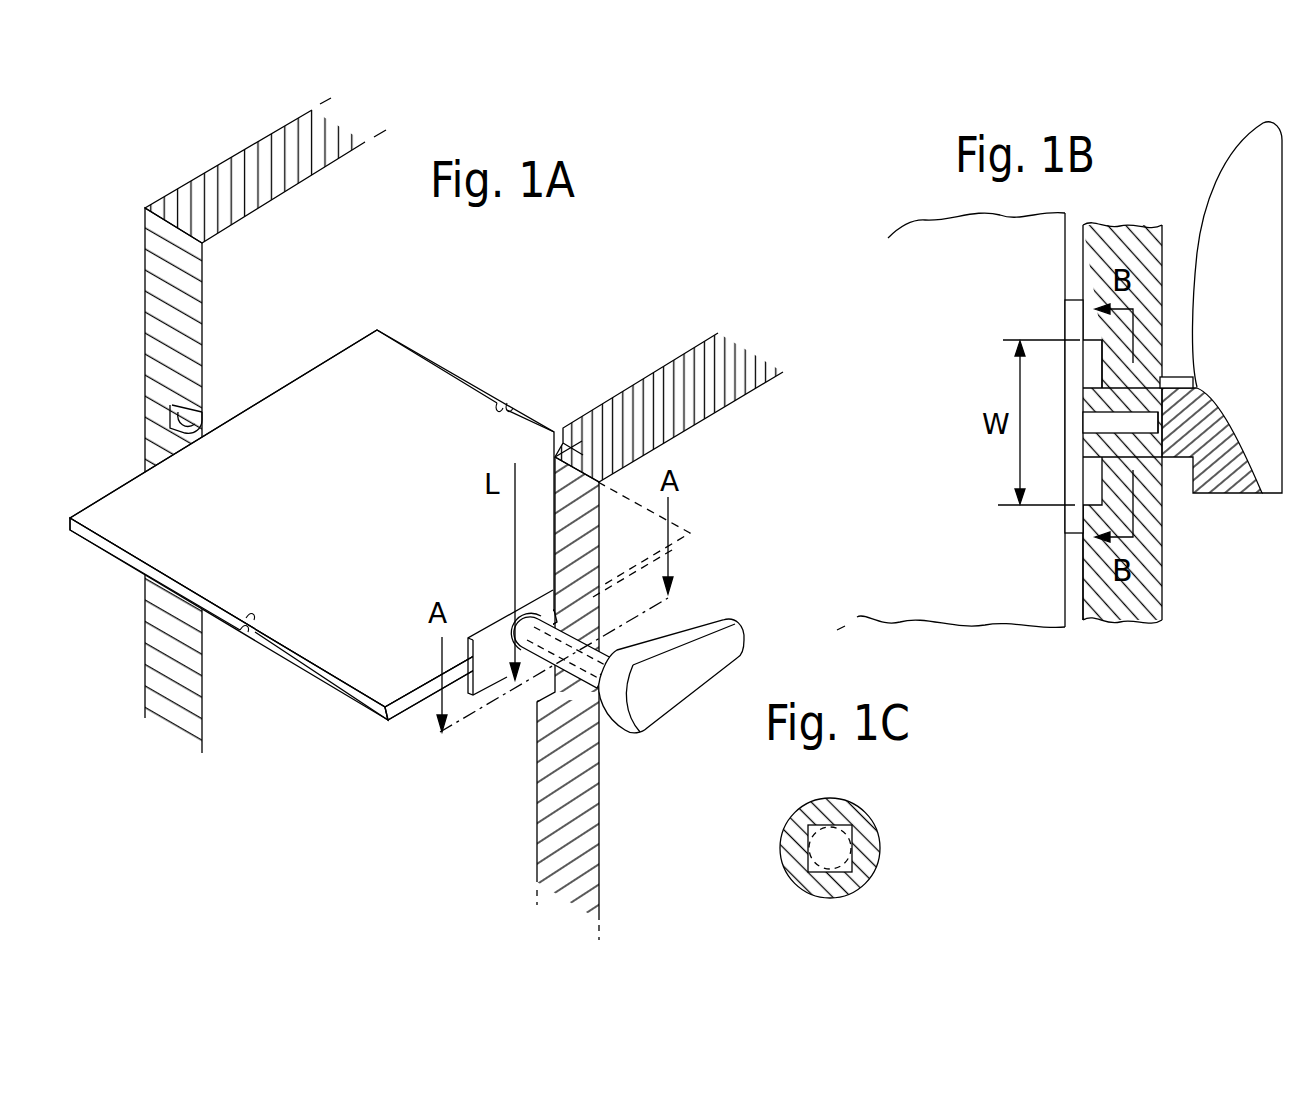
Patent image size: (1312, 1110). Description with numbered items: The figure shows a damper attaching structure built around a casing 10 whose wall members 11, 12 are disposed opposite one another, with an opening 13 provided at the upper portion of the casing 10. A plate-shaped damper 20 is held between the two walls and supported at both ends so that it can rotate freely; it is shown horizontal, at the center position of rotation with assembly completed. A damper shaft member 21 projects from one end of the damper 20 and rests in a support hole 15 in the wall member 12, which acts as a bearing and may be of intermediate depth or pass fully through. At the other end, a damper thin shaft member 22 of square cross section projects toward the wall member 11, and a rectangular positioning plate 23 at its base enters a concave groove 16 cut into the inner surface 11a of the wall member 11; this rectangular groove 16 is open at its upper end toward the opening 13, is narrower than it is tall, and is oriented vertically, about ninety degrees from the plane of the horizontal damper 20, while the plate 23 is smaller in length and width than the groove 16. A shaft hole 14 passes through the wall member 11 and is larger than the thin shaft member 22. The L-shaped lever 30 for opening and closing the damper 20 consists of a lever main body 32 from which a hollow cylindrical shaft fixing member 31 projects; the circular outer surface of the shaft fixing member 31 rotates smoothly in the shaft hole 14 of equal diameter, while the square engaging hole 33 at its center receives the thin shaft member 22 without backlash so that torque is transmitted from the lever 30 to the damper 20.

In FIG. 1A, the casing 10 is at (182, 176).
In FIG. 1B, the wall member 11 is at (1160, 600).
In FIG. 1A, the inner surface 11a is at (630, 387).
In FIG. 1B, the inner surface 11a is at (1078, 600).
In FIG. 1A, the wall member 12 is at (165, 195).
In FIG. 1A, the opening 13 is at (590, 303).
In FIG. 1A, the shaft hole 14 is at (603, 655).
In FIG. 1B, the shaft hole 14 is at (1197, 385).
In FIG. 1A, the support hole 15 is at (203, 420).
In FIG. 1A, the concave groove 16 is at (560, 450).
In FIG. 1B, the concave groove 16 is at (1092, 360).
In FIG. 1A, the damper 20 is at (352, 677).
In FIG. 1B, the damper 20 is at (990, 605).
In FIG. 1A, the damper shaft member 21 is at (157, 450).
In FIG. 1A, the damper thin shaft member 22 is at (593, 727).
In FIG. 1B, the damper thin shaft member 22 is at (1140, 425).
In FIG. 1C, the damper thin shaft member 22 is at (845, 850).
In FIG. 1A, the positioning plate 23 is at (490, 623).
In FIG. 1B, the positioning plate 23 is at (1065, 300).
In FIG. 1A, the lever 30 is at (690, 688).
In FIG. 1B, the lever 30 is at (1250, 127).
In FIG. 1A, the shaft fixing member 31 is at (530, 673).
In FIG. 1B, the shaft fixing member 31 is at (1170, 470).
In FIG. 1C, the shaft fixing member 31 is at (858, 812).
In FIG. 1A, the lever main body 32 is at (720, 637).
In FIG. 1B, the engaging hole 33 is at (1097, 417).
In FIG. 1C, the engaging hole 33 is at (812, 860).